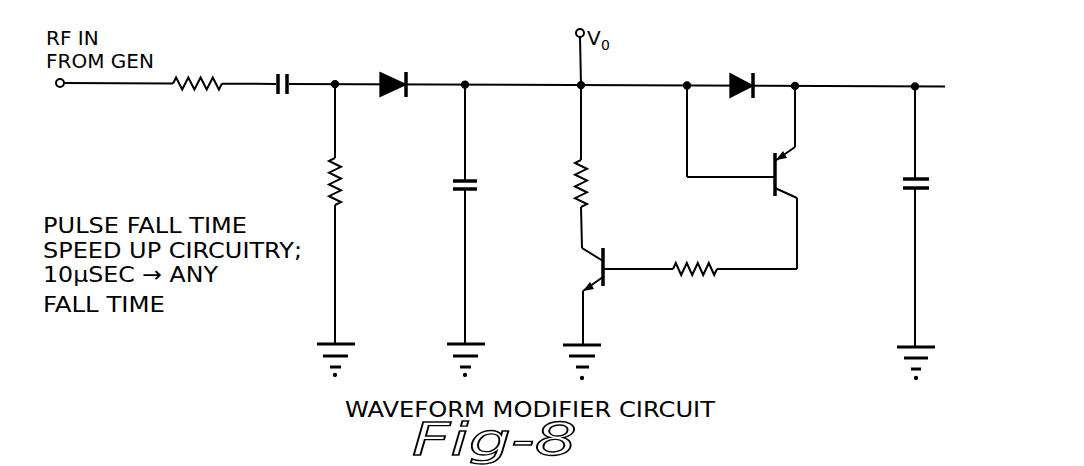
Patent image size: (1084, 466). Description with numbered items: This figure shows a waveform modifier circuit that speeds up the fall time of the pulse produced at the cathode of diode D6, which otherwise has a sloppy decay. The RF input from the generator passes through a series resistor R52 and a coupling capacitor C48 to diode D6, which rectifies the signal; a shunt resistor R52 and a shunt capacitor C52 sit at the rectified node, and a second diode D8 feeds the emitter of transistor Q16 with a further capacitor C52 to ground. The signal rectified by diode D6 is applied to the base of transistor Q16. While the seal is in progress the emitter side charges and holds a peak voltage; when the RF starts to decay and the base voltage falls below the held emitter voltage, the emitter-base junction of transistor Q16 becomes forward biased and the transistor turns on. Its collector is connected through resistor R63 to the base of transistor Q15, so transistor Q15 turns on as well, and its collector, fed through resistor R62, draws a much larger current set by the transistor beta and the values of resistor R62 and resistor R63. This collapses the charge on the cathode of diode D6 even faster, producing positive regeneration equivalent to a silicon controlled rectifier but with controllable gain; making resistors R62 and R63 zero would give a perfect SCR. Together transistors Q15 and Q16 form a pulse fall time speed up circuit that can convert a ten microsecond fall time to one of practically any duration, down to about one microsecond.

The resistor R52 is at (283, 227).
The capacitor C48 is at (279, 99).
The diode D6 is at (393, 98).
The capacitor C52 is at (691, 232).
The resistor R62 is at (608, 166).
The transistor Q15 is at (605, 314).
The resistor R63 is at (735, 285).
The diode D8 is at (745, 100).
The transistor Q16 is at (761, 178).